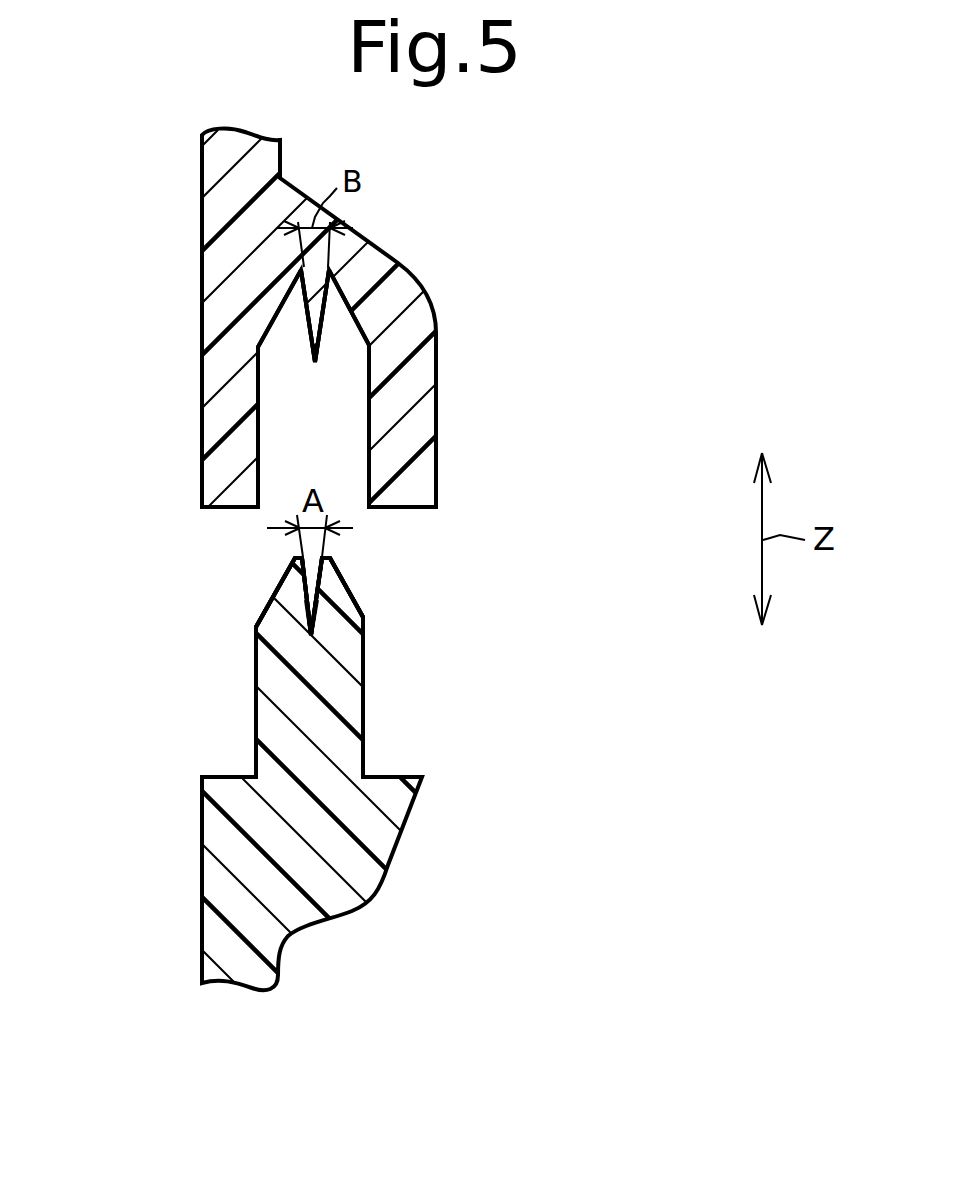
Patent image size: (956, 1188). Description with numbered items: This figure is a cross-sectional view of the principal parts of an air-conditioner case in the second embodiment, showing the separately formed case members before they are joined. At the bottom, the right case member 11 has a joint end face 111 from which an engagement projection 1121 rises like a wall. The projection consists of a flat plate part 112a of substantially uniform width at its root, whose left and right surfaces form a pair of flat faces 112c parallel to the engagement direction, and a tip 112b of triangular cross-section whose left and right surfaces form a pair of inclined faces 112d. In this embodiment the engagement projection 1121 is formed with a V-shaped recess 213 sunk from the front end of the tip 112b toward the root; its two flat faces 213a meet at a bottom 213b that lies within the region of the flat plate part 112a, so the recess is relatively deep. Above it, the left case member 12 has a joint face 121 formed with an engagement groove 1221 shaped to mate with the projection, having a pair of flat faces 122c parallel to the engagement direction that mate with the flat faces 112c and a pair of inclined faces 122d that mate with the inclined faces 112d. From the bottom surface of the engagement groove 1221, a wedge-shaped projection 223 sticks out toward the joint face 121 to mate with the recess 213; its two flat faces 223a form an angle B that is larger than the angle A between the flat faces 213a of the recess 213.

The right case member 11 is at (364, 775).
The left case member 12 is at (371, 319).
The joint end face 111 is at (242, 809).
The engagement projection 1121 is at (418, 698).
The flat plate part 112a is at (212, 744).
The tip 112b is at (209, 596).
The flat faces 112c is at (317, 704).
The inclined faces 112d is at (316, 586).
The recess 213 is at (432, 588).
The flat faces 213a is at (319, 623).
The bottom 213b is at (447, 670).
The joint face 121 is at (163, 436).
The engagement groove 1221 is at (467, 421).
The flat faces 122c is at (323, 430).
The inclined faces 122d is at (322, 316).
The projection 223 is at (434, 343).
The flat faces 223a is at (321, 316).